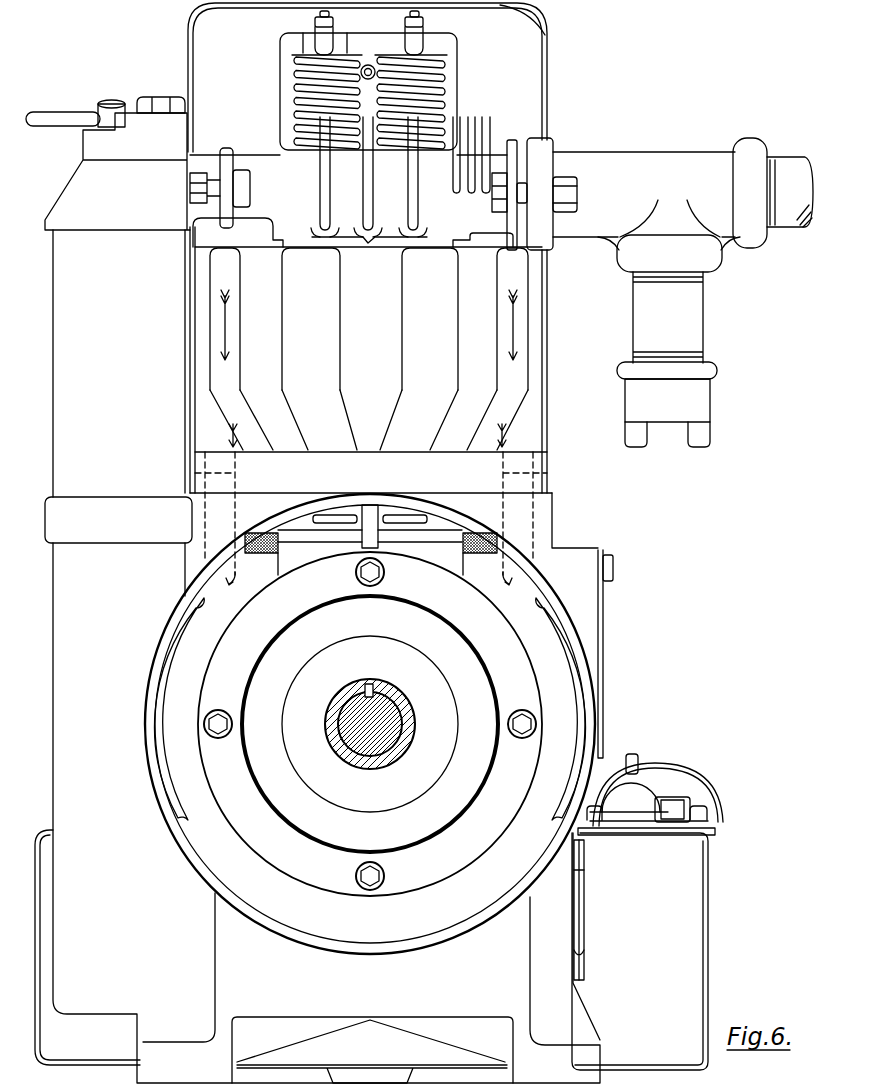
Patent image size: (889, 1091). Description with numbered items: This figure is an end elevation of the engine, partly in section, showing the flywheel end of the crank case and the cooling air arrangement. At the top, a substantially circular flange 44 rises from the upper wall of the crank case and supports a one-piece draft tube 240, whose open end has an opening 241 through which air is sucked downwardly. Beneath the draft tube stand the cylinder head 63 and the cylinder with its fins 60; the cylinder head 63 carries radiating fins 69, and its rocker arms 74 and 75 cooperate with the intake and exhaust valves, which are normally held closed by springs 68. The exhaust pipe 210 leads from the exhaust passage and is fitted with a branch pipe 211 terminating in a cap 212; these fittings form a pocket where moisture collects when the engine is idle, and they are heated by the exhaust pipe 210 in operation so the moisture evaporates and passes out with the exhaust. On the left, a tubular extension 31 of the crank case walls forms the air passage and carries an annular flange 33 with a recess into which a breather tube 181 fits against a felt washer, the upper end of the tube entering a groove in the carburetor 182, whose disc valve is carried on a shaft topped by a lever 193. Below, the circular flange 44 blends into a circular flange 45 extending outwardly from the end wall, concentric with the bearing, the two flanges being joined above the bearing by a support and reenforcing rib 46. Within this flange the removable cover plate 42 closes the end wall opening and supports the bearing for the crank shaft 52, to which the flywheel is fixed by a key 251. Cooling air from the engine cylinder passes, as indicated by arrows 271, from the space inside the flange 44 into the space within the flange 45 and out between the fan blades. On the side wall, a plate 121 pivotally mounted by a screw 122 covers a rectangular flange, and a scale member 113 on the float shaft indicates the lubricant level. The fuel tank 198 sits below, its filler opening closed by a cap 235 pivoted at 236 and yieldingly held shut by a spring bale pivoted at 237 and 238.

The tubular extension 31 is at (72, 632).
The annular flange 33 is at (52, 516).
The removable cover plate 42 is at (456, 812).
The circular flange 44 is at (283, 445).
The circular flange 45 is at (181, 607).
The support and reenforcing rib 46 is at (368, 512).
The crank shaft 52 is at (374, 746).
The fins 60 is at (522, 303).
The cylinder head 63 is at (440, 170).
The springs 68 is at (294, 76).
The radiating fins 69 is at (318, 175).
The rocker arm 74 is at (332, 40).
The rocker arm 75 is at (416, 38).
The scale member 113 is at (584, 915).
The plate 121 is at (603, 706).
The screw 122 is at (614, 562).
The breather tube 181 is at (55, 348).
The carburetor 182 is at (70, 195).
The lever 193 is at (66, 114).
The fuel tank 198 is at (698, 912).
The exhaust pipe 210 is at (668, 152).
The branch pipe 211 is at (690, 308).
The cap 212 is at (706, 398).
The cap 235 is at (640, 784).
The pivot 236 is at (667, 823).
The pivot 237 is at (680, 768).
The pivot 238 is at (712, 831).
The draft tube 240 is at (548, 84).
The opening 241 is at (530, 18).
The key 251 is at (372, 684).
The arrows 271 is at (232, 470).